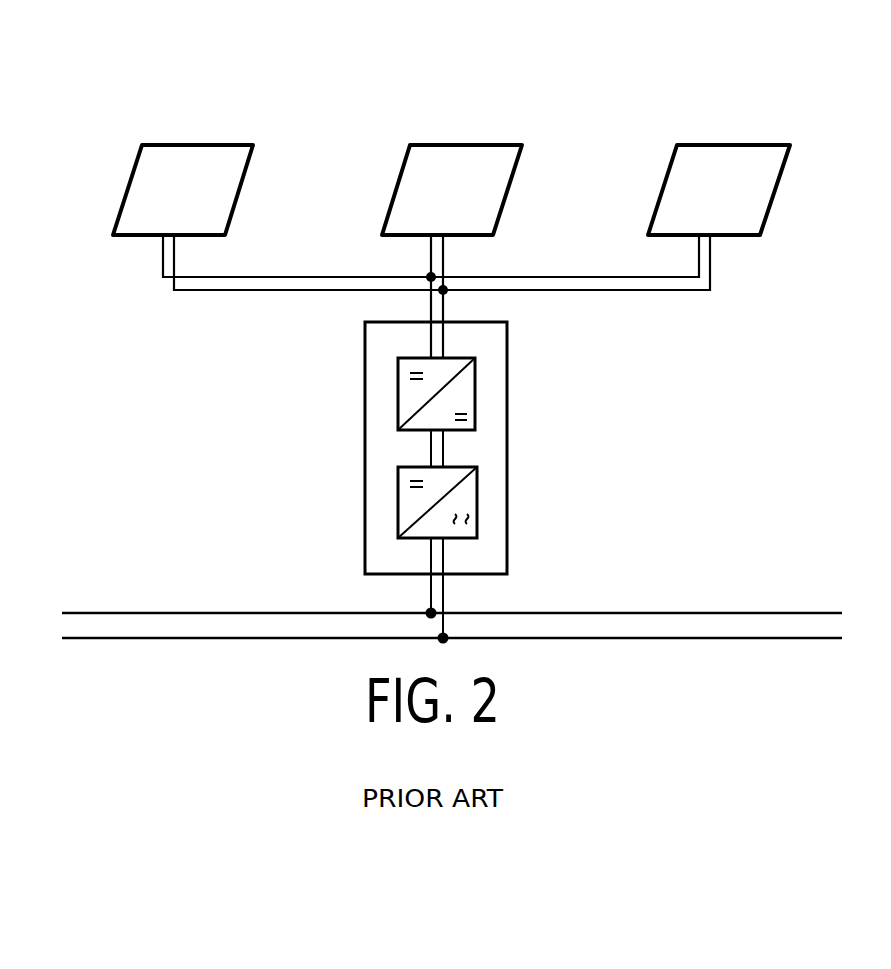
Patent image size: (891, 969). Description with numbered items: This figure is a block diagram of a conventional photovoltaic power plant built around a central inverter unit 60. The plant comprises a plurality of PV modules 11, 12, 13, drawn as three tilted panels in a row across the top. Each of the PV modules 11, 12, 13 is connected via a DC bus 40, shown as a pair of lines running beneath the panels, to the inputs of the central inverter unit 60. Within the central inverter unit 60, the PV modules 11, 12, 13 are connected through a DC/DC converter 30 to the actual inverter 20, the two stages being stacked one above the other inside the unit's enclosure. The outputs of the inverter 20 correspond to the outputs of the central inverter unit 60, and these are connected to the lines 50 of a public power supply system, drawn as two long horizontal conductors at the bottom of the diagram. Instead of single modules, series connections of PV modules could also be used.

The PV module 11 is at (230, 142).
The PV module 12 is at (497, 142).
The PV module 13 is at (765, 142).
The inverter 20 is at (397, 502).
The DC/DC converter 30 is at (397, 395).
The DC bus 40 is at (633, 293).
The lines of a public power supply system 50 is at (632, 612).
The central inverter unit 60 is at (365, 553).